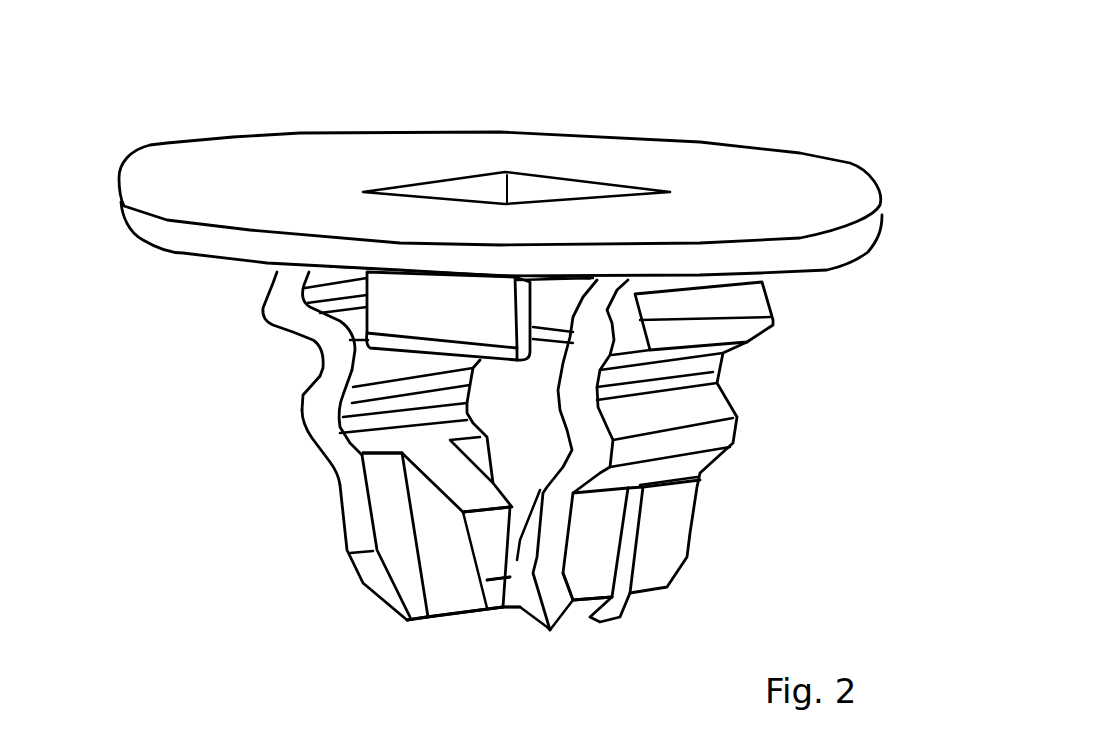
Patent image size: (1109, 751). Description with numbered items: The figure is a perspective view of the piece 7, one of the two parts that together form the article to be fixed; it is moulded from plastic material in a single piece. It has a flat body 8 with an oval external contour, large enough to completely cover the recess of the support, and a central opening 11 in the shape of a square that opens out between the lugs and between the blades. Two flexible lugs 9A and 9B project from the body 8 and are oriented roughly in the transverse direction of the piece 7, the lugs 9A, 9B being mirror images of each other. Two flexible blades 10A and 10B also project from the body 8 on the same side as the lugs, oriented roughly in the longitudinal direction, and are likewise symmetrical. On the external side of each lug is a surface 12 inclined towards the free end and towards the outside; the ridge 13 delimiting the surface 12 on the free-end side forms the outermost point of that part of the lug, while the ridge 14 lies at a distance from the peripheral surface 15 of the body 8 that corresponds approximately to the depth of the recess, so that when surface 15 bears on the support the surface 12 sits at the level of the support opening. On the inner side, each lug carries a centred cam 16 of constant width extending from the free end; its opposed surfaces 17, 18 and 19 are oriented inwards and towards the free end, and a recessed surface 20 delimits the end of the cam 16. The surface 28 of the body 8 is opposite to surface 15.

The piece 7 is at (116, 124).
The body 8 is at (192, 168).
The surface of the body 28 is at (703, 165).
The surface of the body 15 is at (827, 272).
The central opening 11 is at (552, 190).
The flexible blade 10A is at (398, 293).
The flexible blade 10B is at (595, 308).
The flexible lug 9A is at (318, 432).
The flexible lug 9B is at (590, 452).
The ridge 14 is at (320, 377).
The inclined surface 12 is at (300, 398).
The ridge 13 is at (303, 410).
The cam surface 17 is at (445, 474).
The cam surface 18 is at (489, 525).
The cam surface 19 is at (496, 590).
The cam 16 is at (455, 590).
The recessed surface 20 is at (470, 610).